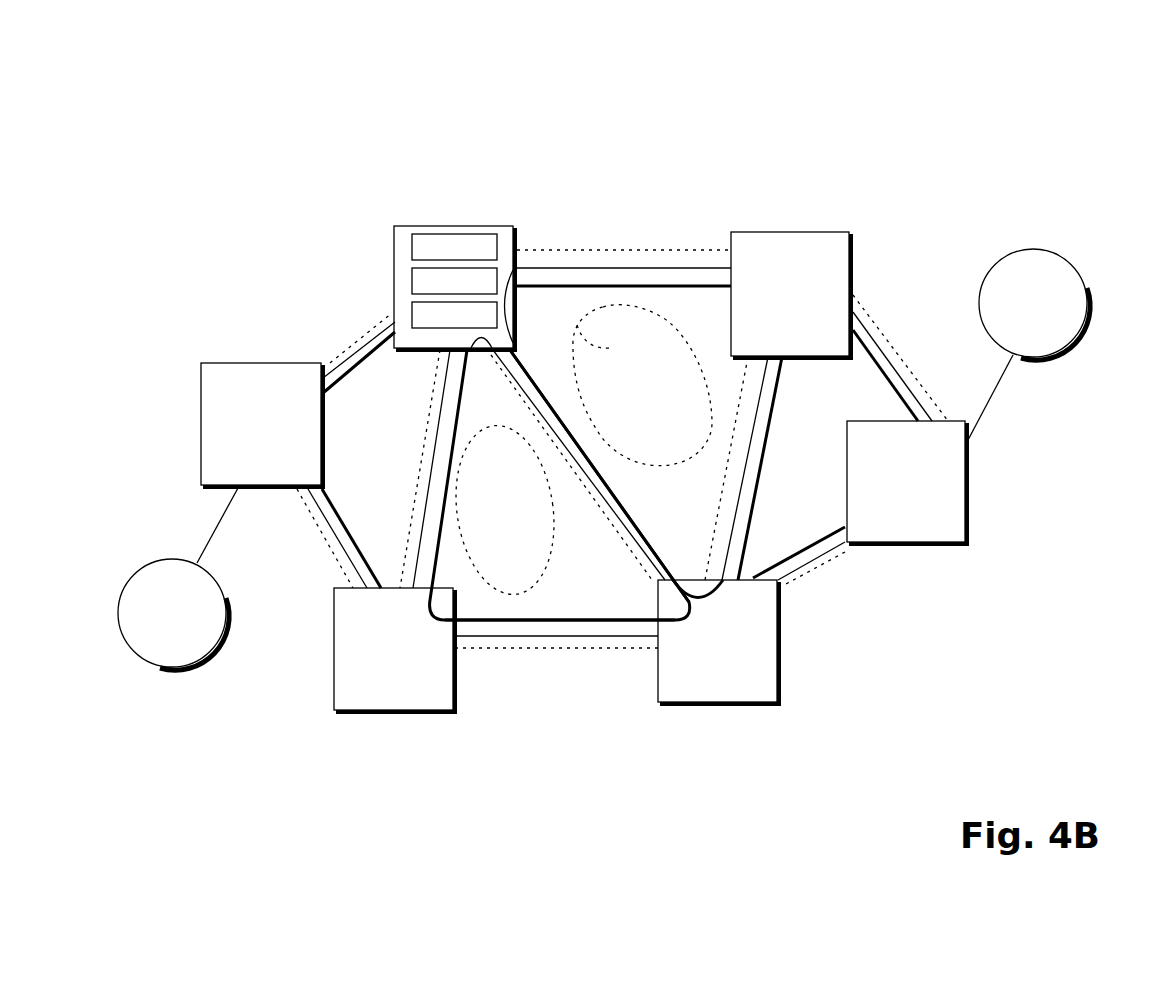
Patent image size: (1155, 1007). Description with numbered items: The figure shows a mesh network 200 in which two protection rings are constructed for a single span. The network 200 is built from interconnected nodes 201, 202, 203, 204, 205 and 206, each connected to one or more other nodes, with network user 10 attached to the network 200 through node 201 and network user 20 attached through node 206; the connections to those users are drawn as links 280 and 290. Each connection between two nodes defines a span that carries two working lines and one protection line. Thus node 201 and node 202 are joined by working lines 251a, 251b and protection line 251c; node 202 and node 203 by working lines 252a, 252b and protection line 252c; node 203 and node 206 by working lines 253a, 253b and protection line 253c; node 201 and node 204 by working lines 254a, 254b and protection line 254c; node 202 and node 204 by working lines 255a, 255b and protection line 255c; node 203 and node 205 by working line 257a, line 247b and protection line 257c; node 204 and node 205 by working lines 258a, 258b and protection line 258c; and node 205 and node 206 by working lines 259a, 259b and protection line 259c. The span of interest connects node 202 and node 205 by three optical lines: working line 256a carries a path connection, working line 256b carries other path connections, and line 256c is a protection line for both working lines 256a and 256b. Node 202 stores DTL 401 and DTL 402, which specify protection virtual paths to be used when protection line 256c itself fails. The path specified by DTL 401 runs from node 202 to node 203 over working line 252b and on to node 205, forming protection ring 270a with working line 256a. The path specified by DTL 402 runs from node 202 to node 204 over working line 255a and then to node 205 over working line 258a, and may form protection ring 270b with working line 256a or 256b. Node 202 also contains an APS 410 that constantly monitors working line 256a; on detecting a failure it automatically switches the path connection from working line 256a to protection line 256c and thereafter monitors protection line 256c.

The network 200 is at (1002, 50).
The node 201 is at (213, 363).
The node 202 is at (460, 282).
The node 203 is at (808, 232).
The node 204 is at (371, 712).
The node 205 is at (710, 704).
The node 206 is at (933, 545).
The network user 10 is at (137, 654).
The network user 20 is at (1090, 326).
The client link 280 is at (213, 533).
The client link 290 is at (993, 397).
The working line 251a is at (330, 363).
The working line 251b is at (357, 348).
The protection line 251c is at (378, 325).
The working line 252a is at (550, 285).
The working line 252b is at (603, 268).
The protection line 252c is at (690, 250).
The working line 253a is at (860, 290).
The working line 253b is at (875, 317).
The protection line 253c is at (908, 357).
The working line 254a is at (358, 558).
The working line 254b is at (333, 535).
The protection line 254c is at (303, 505).
The working line 255a is at (458, 423).
The working line 255b is at (433, 475).
The protection line 255c is at (412, 510).
The working line 256a is at (553, 405).
The working line 256b is at (565, 440).
The protection line 256c is at (573, 477).
The working line 257a is at (776, 392).
The protection link 247b is at (757, 428).
The protection line 257c is at (727, 475).
The working line 258a is at (480, 622).
The working line 258b is at (519, 637).
The protection line 258c is at (564, 648).
The working line 259a is at (815, 545).
The working line 259b is at (803, 568).
The protection line 259c is at (788, 583).
The protection ring 270a is at (642, 385).
The protection ring 270b is at (543, 567).
The DTL 401 is at (497, 247).
The DTL 402 is at (412, 280).
The APS 410 is at (427, 335).